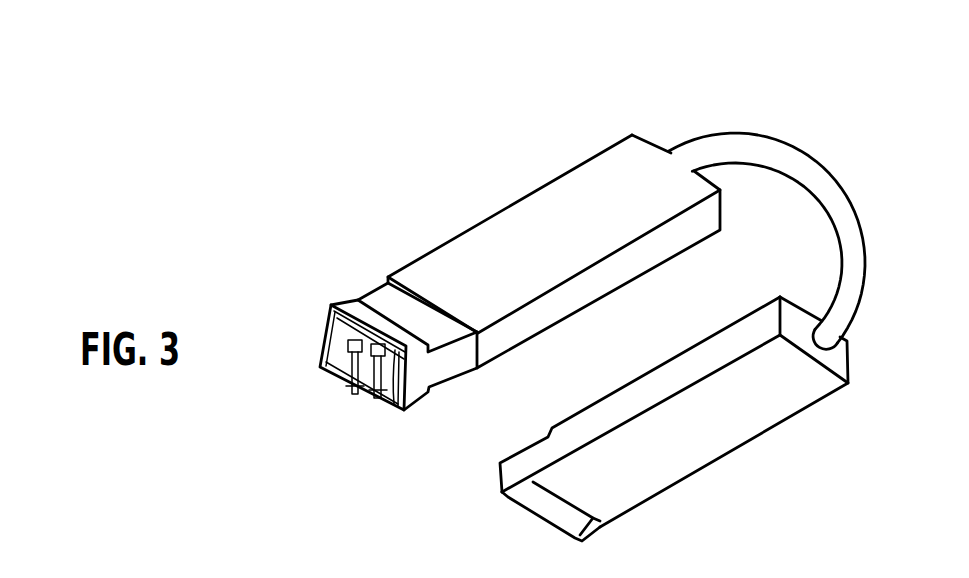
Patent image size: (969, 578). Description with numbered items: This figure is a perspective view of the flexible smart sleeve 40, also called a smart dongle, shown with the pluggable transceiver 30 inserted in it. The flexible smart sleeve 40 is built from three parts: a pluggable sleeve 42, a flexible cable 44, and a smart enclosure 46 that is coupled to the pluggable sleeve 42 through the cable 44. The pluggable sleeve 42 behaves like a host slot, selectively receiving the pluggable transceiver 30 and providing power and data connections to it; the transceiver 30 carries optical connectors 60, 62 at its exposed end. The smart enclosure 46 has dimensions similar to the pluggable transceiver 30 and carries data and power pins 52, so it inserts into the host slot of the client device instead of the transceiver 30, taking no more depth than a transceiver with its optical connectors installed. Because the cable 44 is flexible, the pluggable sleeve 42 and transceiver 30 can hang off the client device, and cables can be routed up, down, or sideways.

The pluggable transceiver 30 is at (334, 264).
The flexible smart sleeve 40 is at (715, 53).
The pluggable sleeve 42 is at (542, 183).
The cable 44 is at (820, 168).
The smart enclosure 46 is at (747, 441).
The data and power pins 52 is at (545, 507).
The optical connector 60 is at (327, 377).
The optical connector 62 is at (358, 397).